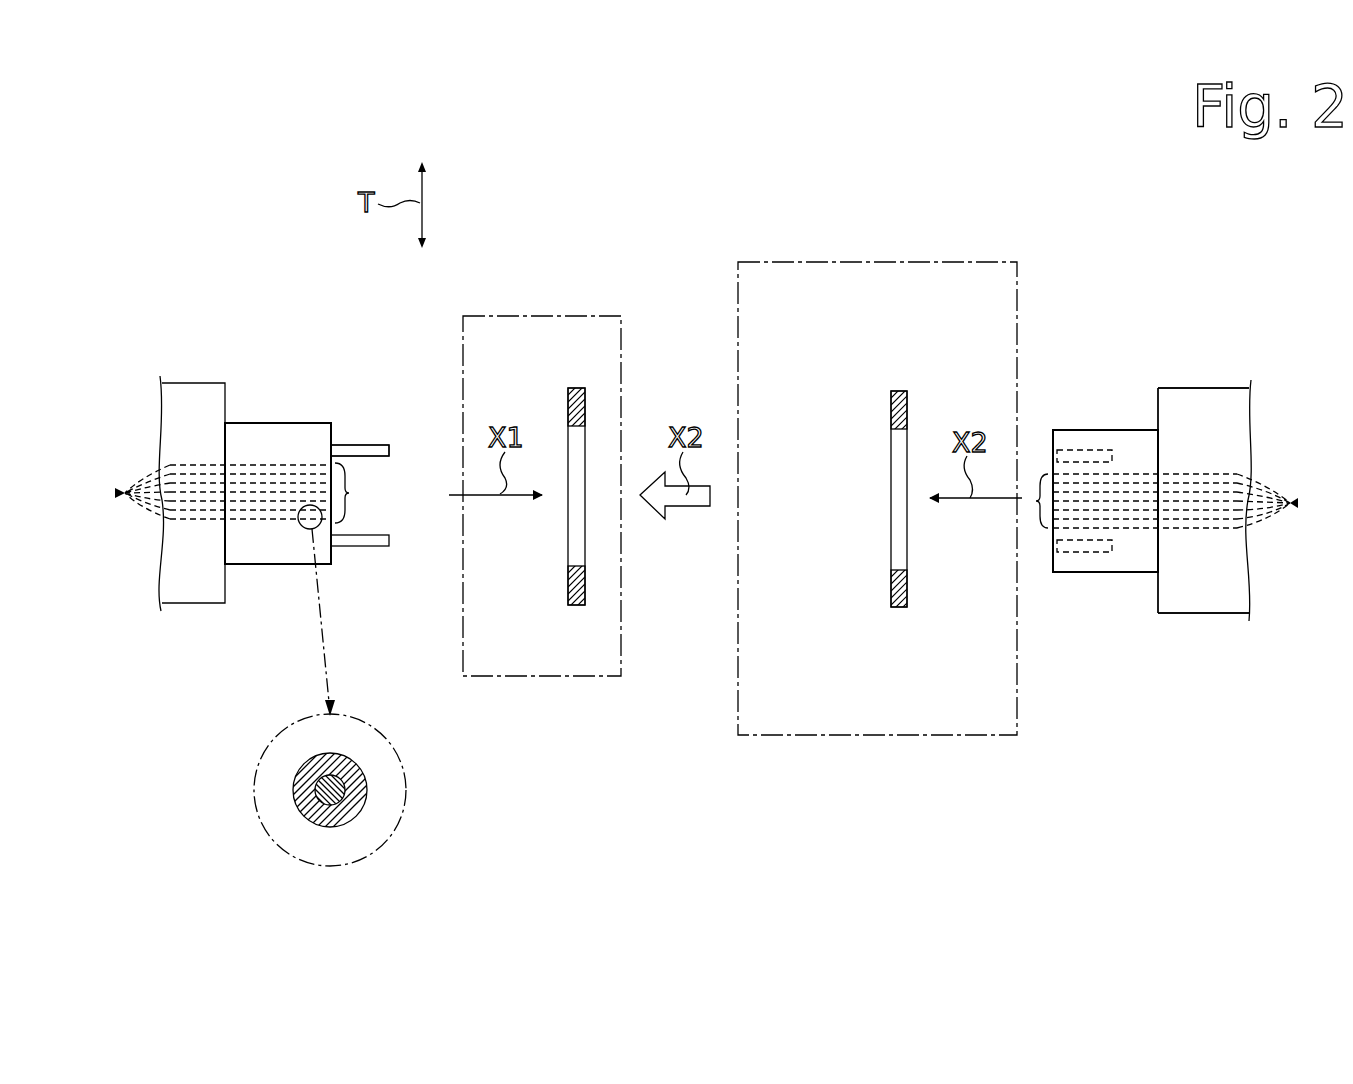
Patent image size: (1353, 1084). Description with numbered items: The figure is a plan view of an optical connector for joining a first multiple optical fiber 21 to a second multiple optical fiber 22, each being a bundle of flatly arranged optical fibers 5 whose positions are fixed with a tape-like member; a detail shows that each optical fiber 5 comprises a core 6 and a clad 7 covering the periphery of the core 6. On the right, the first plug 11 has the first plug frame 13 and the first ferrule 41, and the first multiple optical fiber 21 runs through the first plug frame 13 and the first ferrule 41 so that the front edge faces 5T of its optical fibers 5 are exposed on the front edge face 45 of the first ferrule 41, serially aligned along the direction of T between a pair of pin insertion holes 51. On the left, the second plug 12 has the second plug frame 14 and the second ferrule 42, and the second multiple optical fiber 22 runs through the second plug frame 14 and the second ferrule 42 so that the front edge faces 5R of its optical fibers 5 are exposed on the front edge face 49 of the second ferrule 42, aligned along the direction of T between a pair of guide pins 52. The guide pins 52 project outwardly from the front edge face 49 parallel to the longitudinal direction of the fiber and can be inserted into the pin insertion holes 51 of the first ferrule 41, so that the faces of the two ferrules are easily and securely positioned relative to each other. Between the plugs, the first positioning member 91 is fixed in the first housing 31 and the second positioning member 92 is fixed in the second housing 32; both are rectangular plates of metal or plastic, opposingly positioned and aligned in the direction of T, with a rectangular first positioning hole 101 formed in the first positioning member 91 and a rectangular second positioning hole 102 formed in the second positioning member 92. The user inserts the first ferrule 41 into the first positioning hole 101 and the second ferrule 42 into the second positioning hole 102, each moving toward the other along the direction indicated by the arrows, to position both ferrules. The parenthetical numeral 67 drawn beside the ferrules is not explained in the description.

The optical fiber 5 is at (125, 493).
The core 6 is at (340, 800).
The clad 7 is at (355, 797).
The first plug 11 is at (1213, 370).
The second plug 12 is at (276, 362).
The first plug frame 13 is at (1230, 606).
The second plug frame 14 is at (190, 388).
The first multiple optical fiber 21 is at (1210, 540).
The second multiple optical fiber 22 is at (262, 542).
The first housing 31 is at (855, 262).
The second housing 32 is at (545, 316).
The first ferrule 41 is at (1130, 568).
The second ferrule 42 is at (292, 435).
The front edge face of the first ferrule 45 is at (1050, 440).
The front edge face of the second ferrule 49 is at (337, 427).
The pin insertion hole 51 is at (1080, 456).
The guide pin 52 is at (389, 450).
The lens 67 is at (278, 493).
The first positioning member 91 is at (896, 410).
The second positioning member 92 is at (574, 396).
The first positioning hole 101 is at (896, 467).
The second positioning hole 102 is at (576, 545).
The front edge face of the optical fiber of the second multiple optical fiber 5R is at (349, 493).
The front edge face of the optical fiber of the first multiple optical fiber 5T is at (1036, 501).